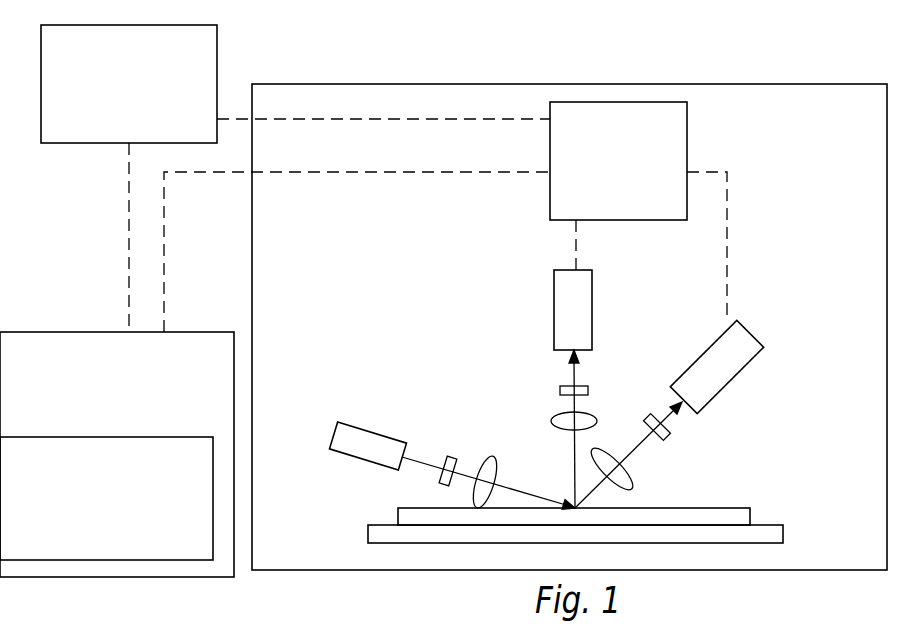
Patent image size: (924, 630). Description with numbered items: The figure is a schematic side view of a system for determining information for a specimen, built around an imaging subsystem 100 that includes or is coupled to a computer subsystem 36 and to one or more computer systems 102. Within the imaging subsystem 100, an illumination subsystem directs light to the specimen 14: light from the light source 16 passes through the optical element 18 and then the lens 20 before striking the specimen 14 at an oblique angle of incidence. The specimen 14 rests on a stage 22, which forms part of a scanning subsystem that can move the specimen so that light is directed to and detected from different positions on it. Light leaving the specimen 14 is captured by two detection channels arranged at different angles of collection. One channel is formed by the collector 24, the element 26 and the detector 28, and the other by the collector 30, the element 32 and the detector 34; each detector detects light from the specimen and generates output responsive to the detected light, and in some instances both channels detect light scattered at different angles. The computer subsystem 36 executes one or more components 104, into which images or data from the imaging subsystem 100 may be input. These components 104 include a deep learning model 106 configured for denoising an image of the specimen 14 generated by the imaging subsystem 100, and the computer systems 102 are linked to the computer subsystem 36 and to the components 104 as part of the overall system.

The imaging subsystem 100 is at (252, 305).
The computer system(s) 102 is at (111, 123).
The one or more components 104 is at (91, 423).
The deep learning model 106 is at (88, 538).
The computer subsystem 36 is at (605, 203).
The specimen 14 is at (408, 508).
The light source 16 is at (337, 428).
The optical element 18 is at (452, 458).
The lens 20 is at (490, 458).
The stage 22 is at (368, 536).
The collector 24 is at (556, 416).
The element 26 is at (560, 388).
The detector 28 is at (554, 312).
The collector 30 is at (632, 481).
The element 32 is at (672, 438).
The detector 34 is at (748, 368).